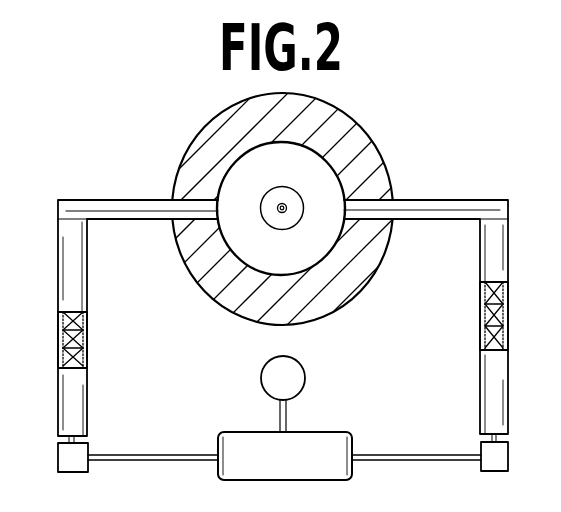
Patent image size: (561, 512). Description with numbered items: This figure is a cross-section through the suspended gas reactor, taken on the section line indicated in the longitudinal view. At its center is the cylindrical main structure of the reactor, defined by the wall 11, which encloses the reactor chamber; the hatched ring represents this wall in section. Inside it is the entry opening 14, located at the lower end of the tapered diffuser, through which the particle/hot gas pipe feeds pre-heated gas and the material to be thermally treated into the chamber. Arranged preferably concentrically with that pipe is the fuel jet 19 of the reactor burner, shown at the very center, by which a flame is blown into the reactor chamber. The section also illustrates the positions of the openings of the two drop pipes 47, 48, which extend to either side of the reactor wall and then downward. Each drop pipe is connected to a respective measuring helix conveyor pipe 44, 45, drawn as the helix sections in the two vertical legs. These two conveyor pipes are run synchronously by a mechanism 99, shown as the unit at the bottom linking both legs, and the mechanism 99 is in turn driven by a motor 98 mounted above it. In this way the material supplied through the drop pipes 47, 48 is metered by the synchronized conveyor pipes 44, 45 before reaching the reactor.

The wall 11 is at (358, 134).
The entry opening 14 is at (277, 200).
The fuel jet 19 is at (282, 213).
The measuring helix conveyor pipe 44 is at (62, 326).
The measuring helix conveyor pipe 45 is at (510, 298).
The drop pipe 47 is at (124, 208).
The drop pipe 48 is at (458, 206).
The motor 98 is at (298, 374).
The mechanism 99 is at (334, 437).